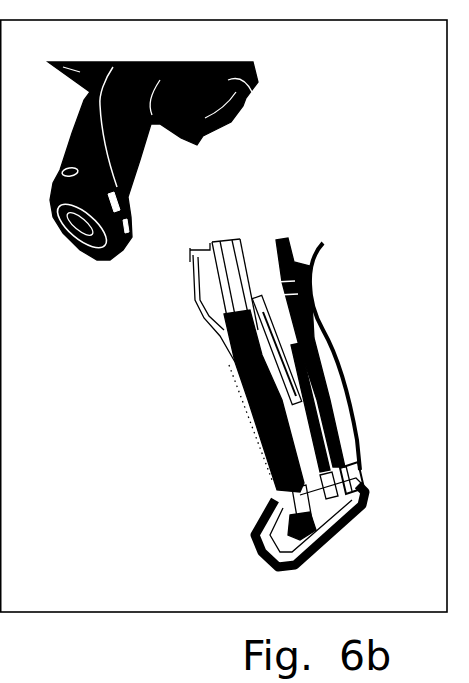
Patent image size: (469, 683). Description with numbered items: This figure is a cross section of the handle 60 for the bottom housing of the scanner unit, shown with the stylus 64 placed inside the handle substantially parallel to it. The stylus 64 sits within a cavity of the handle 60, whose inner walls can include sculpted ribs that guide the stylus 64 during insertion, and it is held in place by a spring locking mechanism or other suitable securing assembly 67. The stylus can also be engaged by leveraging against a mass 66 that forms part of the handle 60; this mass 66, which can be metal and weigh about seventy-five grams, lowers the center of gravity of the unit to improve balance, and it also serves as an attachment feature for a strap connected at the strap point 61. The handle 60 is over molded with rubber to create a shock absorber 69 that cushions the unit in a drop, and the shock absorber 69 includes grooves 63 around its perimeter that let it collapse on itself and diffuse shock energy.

The handle 60 is at (62, 128).
The strap point 61 is at (370, 466).
The grooves 63 is at (130, 210).
The stylus 64 is at (300, 352).
The mass 66 is at (357, 512).
The securing assembly 67 is at (330, 527).
The shock absorber 69 is at (248, 516).